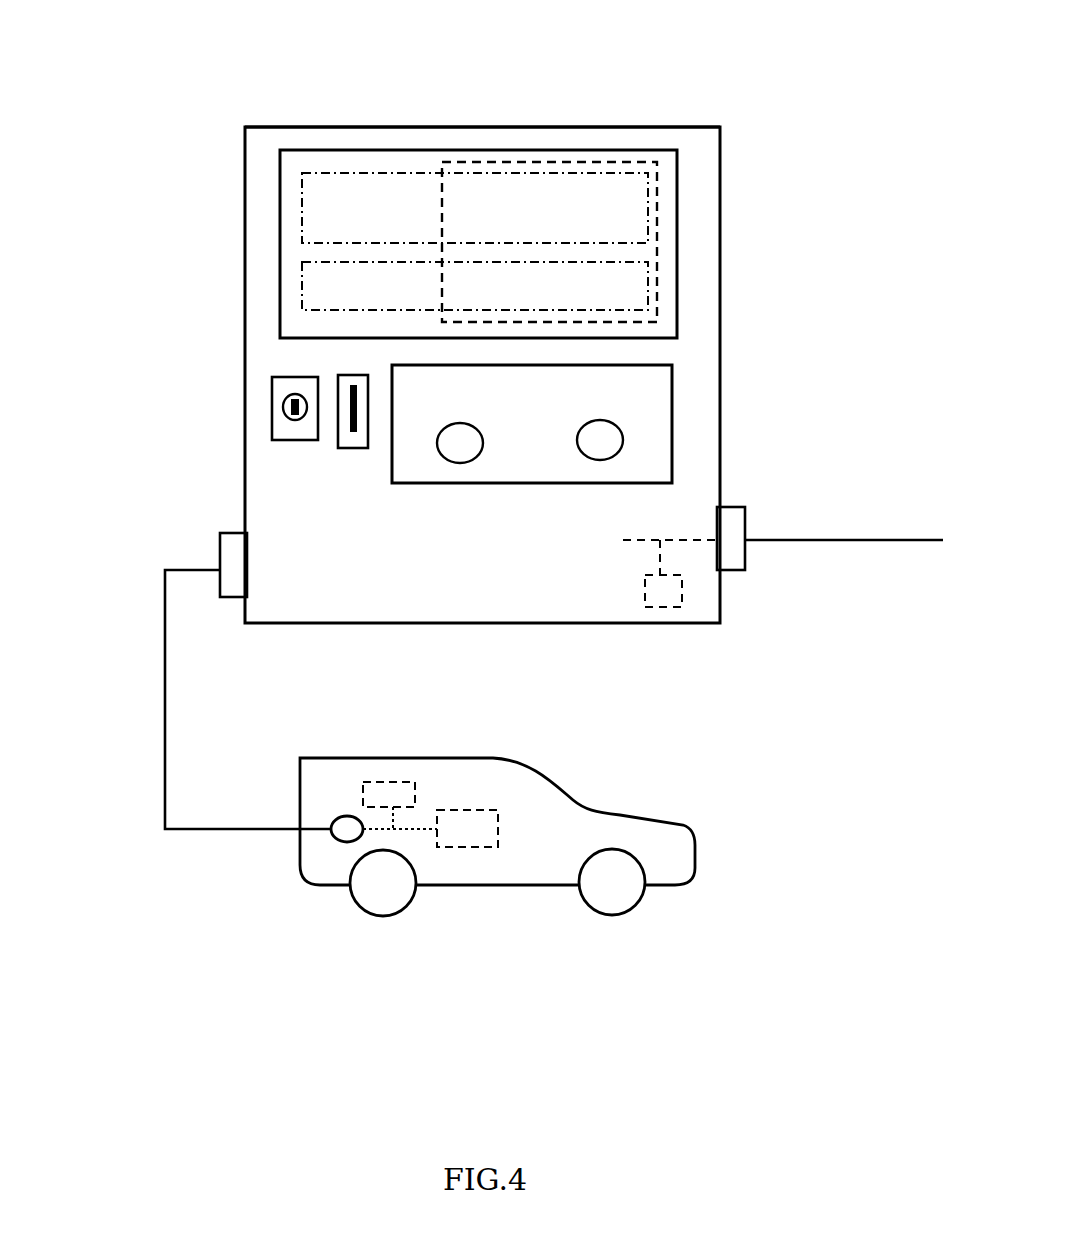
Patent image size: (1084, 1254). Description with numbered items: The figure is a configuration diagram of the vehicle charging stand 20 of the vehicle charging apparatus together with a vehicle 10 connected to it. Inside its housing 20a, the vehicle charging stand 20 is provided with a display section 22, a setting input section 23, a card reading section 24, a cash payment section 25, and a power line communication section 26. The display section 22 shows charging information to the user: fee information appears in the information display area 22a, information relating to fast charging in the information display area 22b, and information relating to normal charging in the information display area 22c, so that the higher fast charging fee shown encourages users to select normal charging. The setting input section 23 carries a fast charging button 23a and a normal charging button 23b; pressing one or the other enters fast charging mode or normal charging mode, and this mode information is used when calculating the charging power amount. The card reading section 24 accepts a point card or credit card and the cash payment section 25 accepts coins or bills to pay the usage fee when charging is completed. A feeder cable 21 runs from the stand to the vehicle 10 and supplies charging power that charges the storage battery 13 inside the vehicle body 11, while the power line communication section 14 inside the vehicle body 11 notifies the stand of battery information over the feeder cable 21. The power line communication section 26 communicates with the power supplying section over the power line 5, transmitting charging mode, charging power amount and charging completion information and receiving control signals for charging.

The power line 5 is at (857, 540).
The vehicle 10 is at (541, 831).
The vehicle body 11 is at (573, 800).
The storage battery 13 is at (470, 847).
The power line communication section 14 is at (407, 782).
The vehicle charging stand 20 is at (553, 98).
The housing 20a is at (368, 125).
The feeder cable 21 is at (165, 676).
The display section 22 is at (677, 216).
The information display area 22a is at (652, 247).
The information display area 22b is at (300, 193).
The information display area 22c is at (300, 277).
The setting input section 23 is at (672, 394).
The fast charging button 23a is at (457, 463).
The normal charging button 23b is at (597, 460).
The card reading section 24 is at (352, 448).
The cash payment section 25 is at (270, 390).
The power line communication section 26 is at (682, 585).